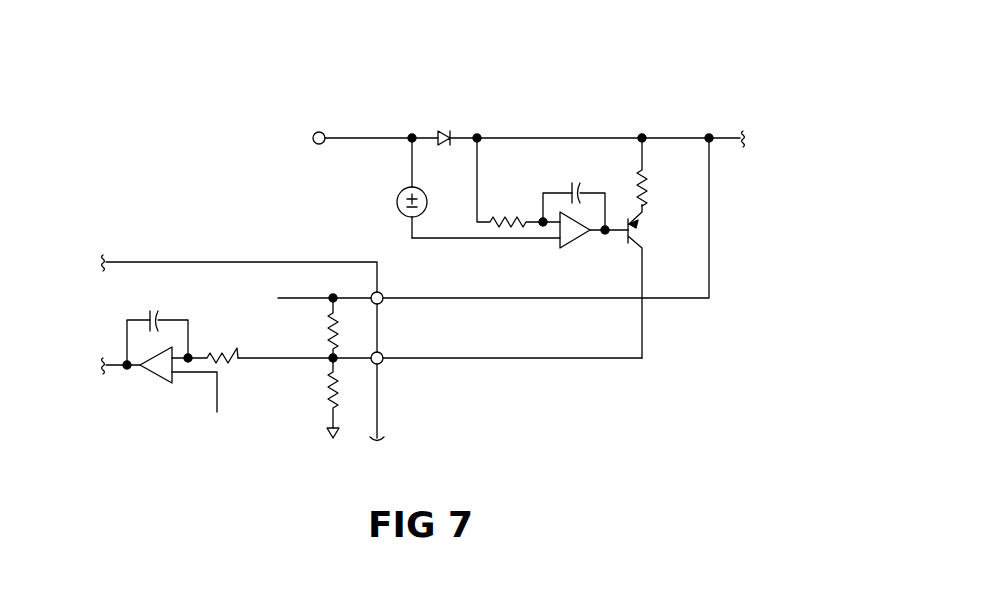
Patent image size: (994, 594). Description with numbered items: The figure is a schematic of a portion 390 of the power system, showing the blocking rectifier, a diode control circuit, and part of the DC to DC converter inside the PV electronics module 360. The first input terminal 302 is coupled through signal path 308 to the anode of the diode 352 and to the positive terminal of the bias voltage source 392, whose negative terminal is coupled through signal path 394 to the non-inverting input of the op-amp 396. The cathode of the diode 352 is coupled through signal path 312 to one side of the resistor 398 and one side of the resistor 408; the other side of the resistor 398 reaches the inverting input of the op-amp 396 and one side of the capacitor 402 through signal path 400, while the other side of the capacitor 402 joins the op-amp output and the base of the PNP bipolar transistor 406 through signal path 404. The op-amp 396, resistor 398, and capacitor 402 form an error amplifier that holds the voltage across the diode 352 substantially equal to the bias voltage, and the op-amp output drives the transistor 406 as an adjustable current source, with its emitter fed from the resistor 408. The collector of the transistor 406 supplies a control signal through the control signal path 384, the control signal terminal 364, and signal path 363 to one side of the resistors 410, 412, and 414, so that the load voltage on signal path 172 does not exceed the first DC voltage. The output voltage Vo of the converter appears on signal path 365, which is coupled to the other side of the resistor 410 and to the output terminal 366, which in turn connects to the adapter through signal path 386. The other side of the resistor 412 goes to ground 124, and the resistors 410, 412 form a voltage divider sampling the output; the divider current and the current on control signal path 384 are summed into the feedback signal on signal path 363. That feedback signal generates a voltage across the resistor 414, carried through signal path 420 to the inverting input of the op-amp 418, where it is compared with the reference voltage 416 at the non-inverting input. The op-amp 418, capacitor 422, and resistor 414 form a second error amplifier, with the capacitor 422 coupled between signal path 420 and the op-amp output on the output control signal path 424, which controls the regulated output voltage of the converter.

The portion of system 390 is at (549, 63).
The first input terminal 302 is at (322, 131).
The signal path 308 is at (380, 136).
The diode 352 is at (442, 134).
The bias voltage source 392 is at (397, 193).
The signal path 394 is at (474, 240).
The resistor 398 is at (506, 219).
The signal path 400 is at (542, 218).
The capacitor 402 is at (575, 190).
The op-amp 396 is at (590, 238).
The signal path 404 is at (620, 240).
The bipolar transistor 406 is at (627, 222).
The resistor 408 is at (648, 186).
The signal path 312 is at (652, 136).
The signal path 172 is at (728, 135).
The signal path 386 is at (505, 296).
The control signal path 384 is at (502, 360).
The output terminal 366 is at (382, 293).
The control signal terminal 364 is at (381, 366).
The PV electronics module 360 is at (230, 260).
The signal path 365 is at (330, 295).
The resistor 410 is at (340, 338).
The signal path 363 is at (278, 362).
The resistor 412 is at (324, 396).
The ground 124 is at (328, 440).
The resistor 414 is at (208, 354).
The signal path 420 is at (190, 352).
The capacitor 422 is at (147, 316).
The op-amp 418 is at (152, 378).
The output control signal path 424 is at (115, 369).
The reference voltage 416 is at (196, 432).